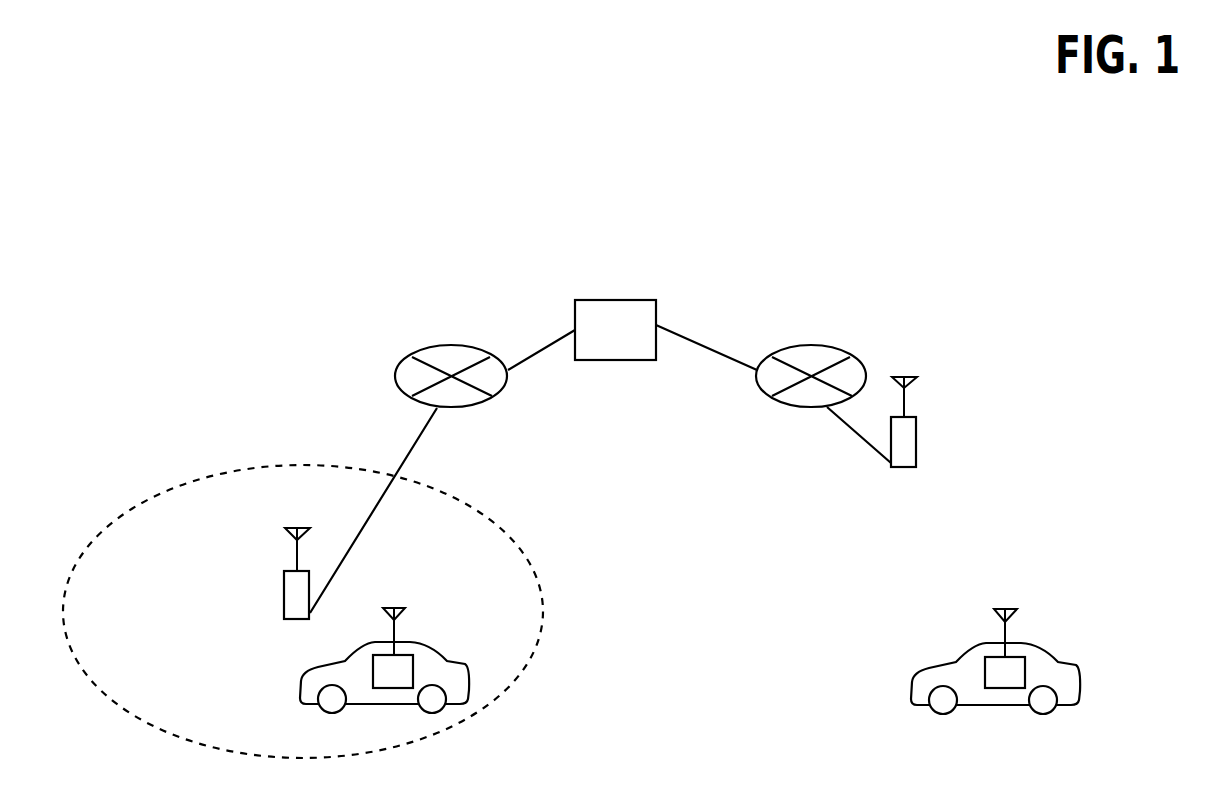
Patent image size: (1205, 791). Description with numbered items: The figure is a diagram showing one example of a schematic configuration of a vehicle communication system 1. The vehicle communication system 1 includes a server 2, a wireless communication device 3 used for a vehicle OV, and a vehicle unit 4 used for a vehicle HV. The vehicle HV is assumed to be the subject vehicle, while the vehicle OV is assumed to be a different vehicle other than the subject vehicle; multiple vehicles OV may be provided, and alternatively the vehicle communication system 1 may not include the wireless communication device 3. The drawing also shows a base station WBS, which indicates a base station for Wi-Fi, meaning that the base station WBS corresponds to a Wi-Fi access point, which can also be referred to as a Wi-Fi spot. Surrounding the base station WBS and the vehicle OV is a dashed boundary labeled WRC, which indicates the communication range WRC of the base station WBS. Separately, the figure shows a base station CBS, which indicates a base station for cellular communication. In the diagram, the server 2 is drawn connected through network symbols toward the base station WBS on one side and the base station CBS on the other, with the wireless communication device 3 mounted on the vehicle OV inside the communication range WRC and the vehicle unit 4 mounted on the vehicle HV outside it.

The vehicle communication system 1 is at (1043, 259).
The server 2 is at (643, 300).
The wireless communication device 3 is at (411, 655).
The vehicle unit 4 is at (1019, 657).
The base station for cellular communication CBS is at (908, 417).
The base station for Wi-Fi WBS is at (291, 571).
The communication range WRC is at (492, 524).
The vehicle OV is at (446, 659).
The vehicle HV is at (1058, 660).